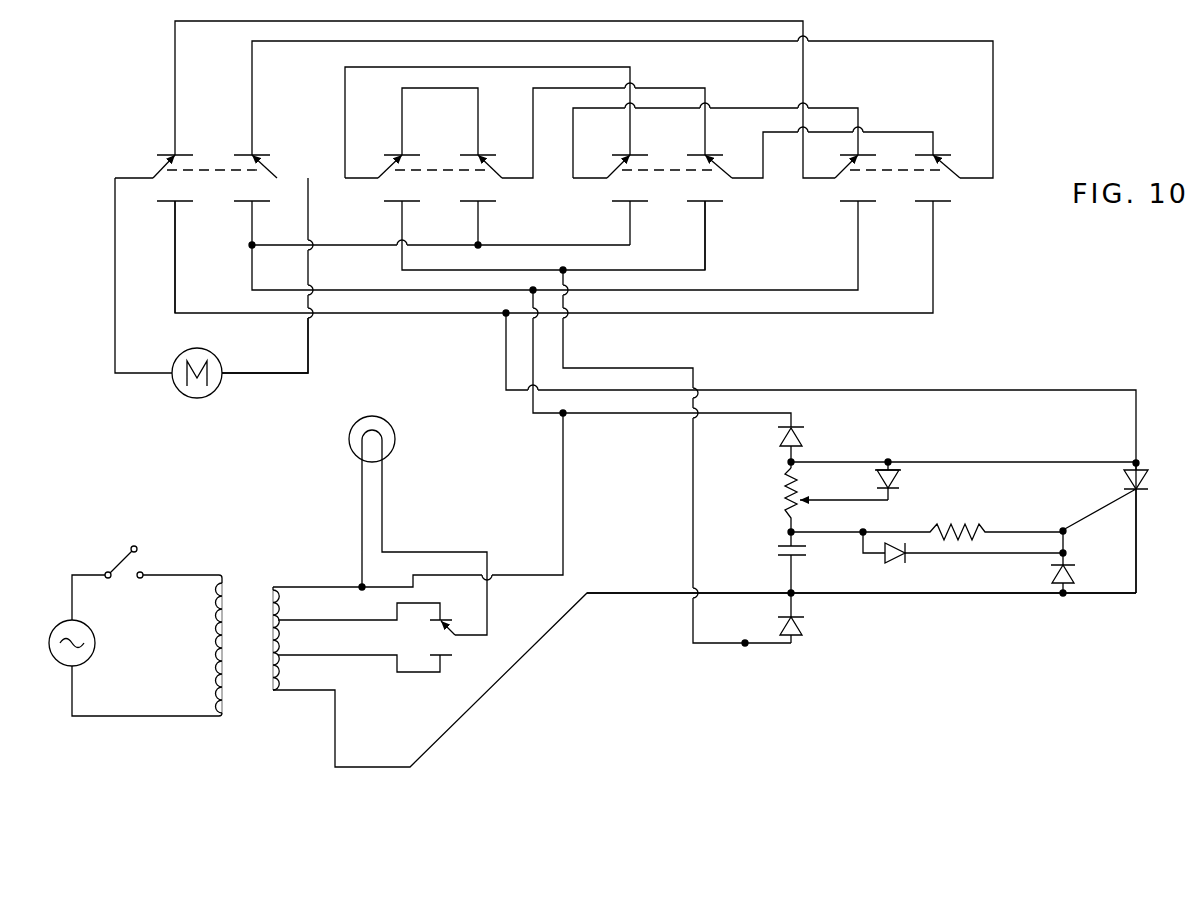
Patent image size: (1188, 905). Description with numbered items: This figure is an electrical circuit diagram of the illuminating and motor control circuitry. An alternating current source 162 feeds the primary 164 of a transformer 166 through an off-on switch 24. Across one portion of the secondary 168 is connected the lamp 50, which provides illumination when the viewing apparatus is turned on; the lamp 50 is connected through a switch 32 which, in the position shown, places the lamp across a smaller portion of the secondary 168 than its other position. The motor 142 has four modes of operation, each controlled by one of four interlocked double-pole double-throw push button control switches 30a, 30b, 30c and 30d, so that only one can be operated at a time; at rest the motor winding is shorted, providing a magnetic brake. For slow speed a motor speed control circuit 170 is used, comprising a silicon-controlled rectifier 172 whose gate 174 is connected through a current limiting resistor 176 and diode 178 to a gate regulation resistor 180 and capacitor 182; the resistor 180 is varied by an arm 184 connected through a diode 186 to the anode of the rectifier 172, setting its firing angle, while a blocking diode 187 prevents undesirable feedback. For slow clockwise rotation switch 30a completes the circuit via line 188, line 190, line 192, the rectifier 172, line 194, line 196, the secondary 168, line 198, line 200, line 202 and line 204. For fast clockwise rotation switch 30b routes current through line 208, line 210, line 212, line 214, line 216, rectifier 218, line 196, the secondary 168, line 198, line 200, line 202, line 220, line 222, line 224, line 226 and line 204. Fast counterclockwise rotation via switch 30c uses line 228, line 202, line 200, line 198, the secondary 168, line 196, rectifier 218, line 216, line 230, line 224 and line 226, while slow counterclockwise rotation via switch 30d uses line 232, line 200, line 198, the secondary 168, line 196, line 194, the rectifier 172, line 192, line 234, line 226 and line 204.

The off-on switch 24 is at (118, 563).
The control switch 30a is at (215, 178).
The control switch 30b is at (440, 178).
The control switch 30c is at (669, 178).
The control switch 30d is at (897, 178).
The switch 32 is at (366, 637).
The lamp 50 is at (396, 436).
The motor 142 is at (205, 397).
The alternating current source 162 is at (82, 666).
The primary 164 is at (218, 635).
The transformer 166 is at (251, 582).
The secondary 168 is at (273, 690).
The motor speed control circuit 170 is at (1045, 365).
The silicon-controlled rectifier 172 is at (1124, 478).
The gate 174 is at (1068, 535).
The current limiting resistor 176 is at (958, 528).
The diode 178 is at (898, 562).
The gate regulation resistor 180 is at (786, 490).
The capacitor 182 is at (778, 549).
The arm 184 is at (962, 480).
The diode 186 is at (900, 472).
The blocking diode 187 is at (778, 440).
The line 188 is at (115, 300).
The line 190 is at (175, 275).
The line 192 is at (506, 345).
The line 194 is at (997, 595).
The line 196 is at (543, 638).
The line 198 is at (563, 550).
The line 200 is at (533, 408).
The line 202 is at (315, 292).
The line 204 is at (308, 358).
The line 208 is at (175, 120).
The line 210 is at (830, 108).
The line 212 is at (630, 67).
The line 214 is at (402, 218).
The line 216 is at (563, 335).
The rectifier 218 is at (778, 627).
The line 220 is at (438, 245).
The line 222 is at (533, 124).
The line 224 is at (747, 178).
The line 226 is at (993, 153).
The line 228 is at (630, 220).
The line 230 is at (705, 250).
The line 232 is at (858, 250).
The line 234 is at (933, 275).